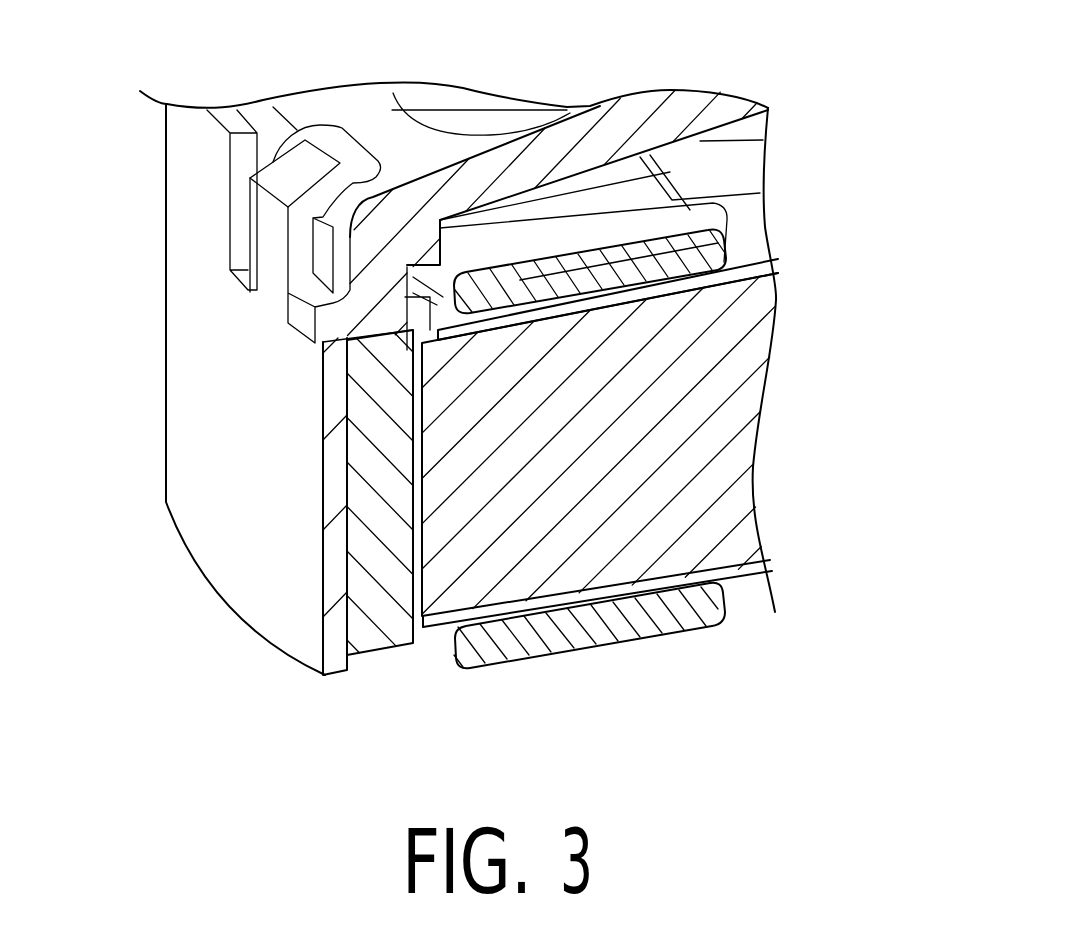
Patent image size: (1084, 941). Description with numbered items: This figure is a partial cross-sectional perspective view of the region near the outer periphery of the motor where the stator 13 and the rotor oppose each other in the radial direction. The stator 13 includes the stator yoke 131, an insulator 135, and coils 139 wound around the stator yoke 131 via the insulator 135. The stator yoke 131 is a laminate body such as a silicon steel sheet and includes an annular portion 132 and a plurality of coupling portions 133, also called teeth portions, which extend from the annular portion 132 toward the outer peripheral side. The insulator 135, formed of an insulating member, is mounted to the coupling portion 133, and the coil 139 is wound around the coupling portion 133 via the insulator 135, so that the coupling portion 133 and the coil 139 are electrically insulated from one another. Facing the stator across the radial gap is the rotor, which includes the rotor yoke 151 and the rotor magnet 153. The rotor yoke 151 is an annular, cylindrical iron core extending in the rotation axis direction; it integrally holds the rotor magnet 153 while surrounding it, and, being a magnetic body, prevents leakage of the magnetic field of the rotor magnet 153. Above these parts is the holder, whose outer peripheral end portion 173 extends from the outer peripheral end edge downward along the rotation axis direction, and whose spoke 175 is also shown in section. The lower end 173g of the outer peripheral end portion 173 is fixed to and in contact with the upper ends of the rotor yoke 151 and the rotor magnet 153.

The stator 13 is at (678, 433).
The stator yoke 131 is at (655, 444).
The annular portion 132 is at (728, 455).
The coupling portion 133 is at (592, 460).
The insulator 135 is at (768, 266).
The coil 139 is at (722, 254).
The rotor yoke 151 is at (302, 625).
The rotor magnet 153 is at (386, 624).
The outer peripheral end portion 173 is at (329, 120).
The lower end 173g is at (372, 332).
The spoke 175 is at (689, 102).